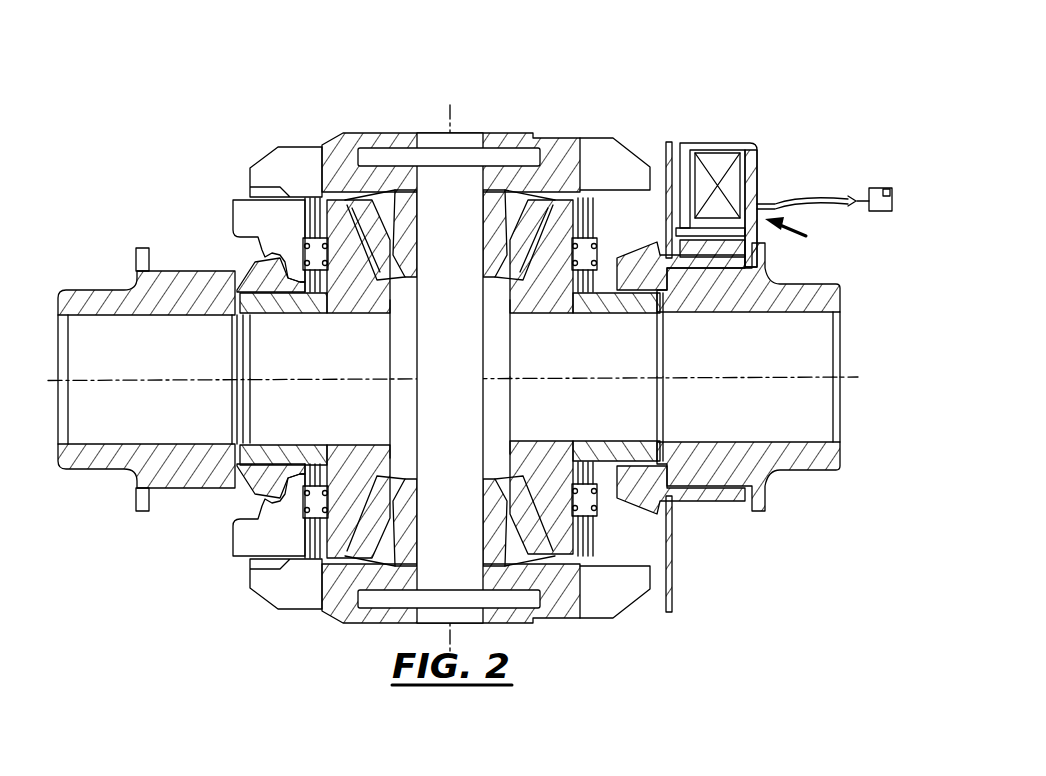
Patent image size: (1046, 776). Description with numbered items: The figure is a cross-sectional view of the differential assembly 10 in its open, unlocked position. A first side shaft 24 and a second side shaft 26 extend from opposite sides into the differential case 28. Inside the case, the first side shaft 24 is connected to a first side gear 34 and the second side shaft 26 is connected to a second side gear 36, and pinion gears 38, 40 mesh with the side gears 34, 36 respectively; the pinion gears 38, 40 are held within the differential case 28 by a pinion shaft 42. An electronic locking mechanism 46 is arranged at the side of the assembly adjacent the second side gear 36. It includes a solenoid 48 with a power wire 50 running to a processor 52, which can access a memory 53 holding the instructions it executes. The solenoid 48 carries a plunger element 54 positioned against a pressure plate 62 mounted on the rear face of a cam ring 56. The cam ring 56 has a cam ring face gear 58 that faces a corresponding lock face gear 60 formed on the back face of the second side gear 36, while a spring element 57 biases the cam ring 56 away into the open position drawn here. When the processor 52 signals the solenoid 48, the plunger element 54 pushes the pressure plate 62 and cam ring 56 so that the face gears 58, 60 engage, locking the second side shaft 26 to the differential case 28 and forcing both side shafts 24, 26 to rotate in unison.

The differential assembly 10 is at (596, 134).
The first side shaft 24 is at (83, 430).
The second side shaft 26 is at (822, 340).
The differential case 28 is at (340, 612).
The first side gear 34 is at (363, 302).
The second side gear 36 is at (567, 307).
The pinion gear 38 is at (500, 232).
The pinion gear 40 is at (500, 525).
The pinion shaft 42 is at (444, 291).
The electronic locking mechanism 46 is at (796, 234).
The solenoid 48 is at (756, 184).
The power wire 50 is at (857, 202).
The processor 52 is at (884, 212).
The memory 53 is at (886, 189).
The plunger element 54 is at (733, 256).
The cam ring 56 is at (633, 227).
The spring element 57 is at (585, 287).
The cam ring face gear 58 is at (597, 215).
The lock face gear 60 is at (577, 223).
The pressure plate 62 is at (666, 165).